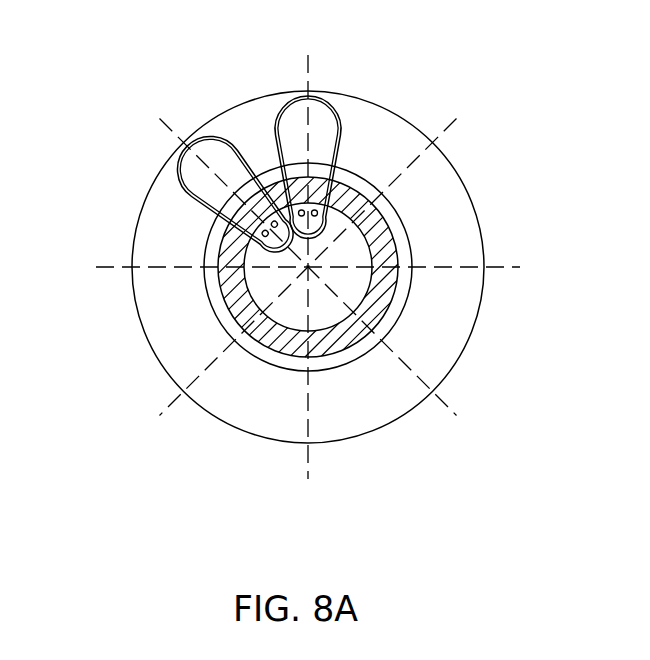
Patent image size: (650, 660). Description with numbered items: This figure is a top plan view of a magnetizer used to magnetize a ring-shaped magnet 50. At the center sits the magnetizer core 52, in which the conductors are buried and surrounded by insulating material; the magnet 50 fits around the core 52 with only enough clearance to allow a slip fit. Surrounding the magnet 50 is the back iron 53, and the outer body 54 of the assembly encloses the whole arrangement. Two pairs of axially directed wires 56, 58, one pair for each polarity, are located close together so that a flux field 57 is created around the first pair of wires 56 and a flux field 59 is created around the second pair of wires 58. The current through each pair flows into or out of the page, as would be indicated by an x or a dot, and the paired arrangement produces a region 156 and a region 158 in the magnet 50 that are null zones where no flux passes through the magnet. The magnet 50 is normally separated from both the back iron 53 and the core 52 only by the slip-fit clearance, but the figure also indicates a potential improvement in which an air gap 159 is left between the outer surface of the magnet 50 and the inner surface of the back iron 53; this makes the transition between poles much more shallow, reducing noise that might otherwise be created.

The magnet 50 is at (395, 248).
The magnetizer core 52 is at (332, 310).
The back iron 53 is at (408, 172).
The outer body 54 is at (450, 307).
The paired axially directed wires 56 is at (253, 160).
The flux field 57 is at (185, 153).
The paired axially directed wires 58 is at (277, 118).
The flux field 59 is at (340, 127).
The null zone region 156 is at (197, 200).
The null zone region 158 is at (307, 118).
The air gap 159 is at (222, 322).